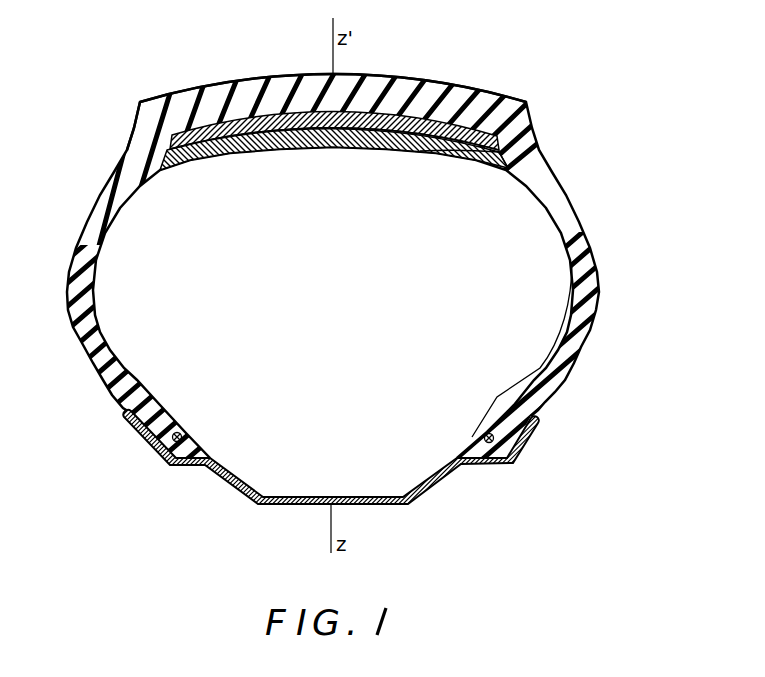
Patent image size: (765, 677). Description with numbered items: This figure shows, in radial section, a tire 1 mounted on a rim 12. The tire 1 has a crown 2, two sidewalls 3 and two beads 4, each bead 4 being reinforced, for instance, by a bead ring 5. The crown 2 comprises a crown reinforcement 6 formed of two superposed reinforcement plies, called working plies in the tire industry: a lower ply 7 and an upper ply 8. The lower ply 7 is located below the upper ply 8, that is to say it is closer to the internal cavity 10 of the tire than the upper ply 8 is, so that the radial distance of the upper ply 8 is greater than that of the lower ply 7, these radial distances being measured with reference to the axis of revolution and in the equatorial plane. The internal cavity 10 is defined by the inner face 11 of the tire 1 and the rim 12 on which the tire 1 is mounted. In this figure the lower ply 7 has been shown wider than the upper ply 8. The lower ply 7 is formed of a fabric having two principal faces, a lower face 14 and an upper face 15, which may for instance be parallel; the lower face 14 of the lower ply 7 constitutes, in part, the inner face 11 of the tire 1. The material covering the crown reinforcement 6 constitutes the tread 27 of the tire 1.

The tire 1 is at (382, 253).
The crown 2 is at (523, 108).
The sidewalls 3 is at (67, 290).
The beads 4 is at (180, 425).
The bead ring 5 is at (182, 437).
The crown reinforcement 6 is at (441, 116).
The lower ply 7 is at (185, 170).
The upper ply 8 is at (247, 118).
The internal cavity 10 is at (316, 305).
The inner face 11 is at (530, 200).
The rim 12 is at (420, 487).
The lower face 14 is at (452, 160).
The upper face 15 is at (308, 127).
The tread 27 is at (203, 83).